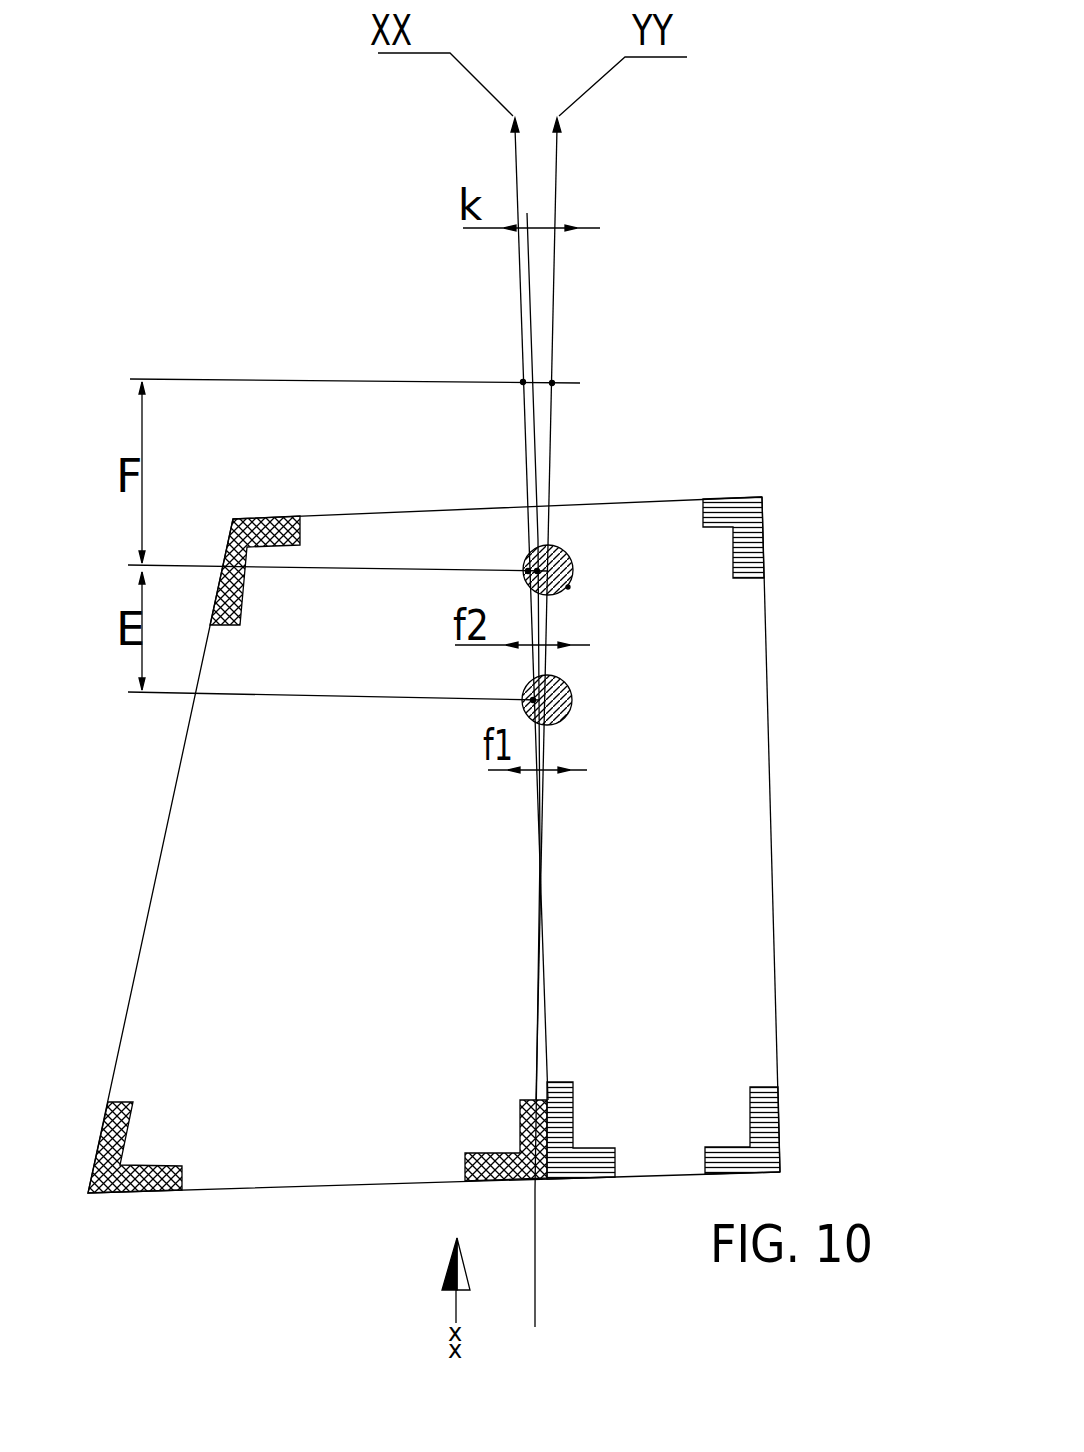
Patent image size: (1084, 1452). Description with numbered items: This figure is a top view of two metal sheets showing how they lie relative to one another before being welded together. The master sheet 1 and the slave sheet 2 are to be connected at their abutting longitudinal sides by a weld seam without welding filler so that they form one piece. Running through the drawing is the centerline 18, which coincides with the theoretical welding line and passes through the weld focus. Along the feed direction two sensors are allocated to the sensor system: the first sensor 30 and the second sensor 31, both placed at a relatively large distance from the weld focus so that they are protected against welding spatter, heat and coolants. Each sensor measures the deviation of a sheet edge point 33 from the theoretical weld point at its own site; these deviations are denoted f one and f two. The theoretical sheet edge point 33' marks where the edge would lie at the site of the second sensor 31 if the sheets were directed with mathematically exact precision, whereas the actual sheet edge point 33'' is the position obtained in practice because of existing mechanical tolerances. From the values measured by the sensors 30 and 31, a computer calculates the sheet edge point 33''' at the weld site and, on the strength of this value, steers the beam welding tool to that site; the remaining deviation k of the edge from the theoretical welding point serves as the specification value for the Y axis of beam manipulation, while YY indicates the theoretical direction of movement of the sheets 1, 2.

The master sheet 1 is at (158, 992).
The slave sheet 2 is at (718, 933).
The centerline 18 is at (535, 1282).
The first sensor 30 is at (572, 708).
The second sensor 31 is at (711, 498).
The sheet edge point 33 is at (334, 726).
The theoretical sheet edge point 33' is at (624, 601).
The actual sheet edge point 33'' is at (338, 596).
The calculated sheet edge point at the weld site 33''' is at (355, 406).